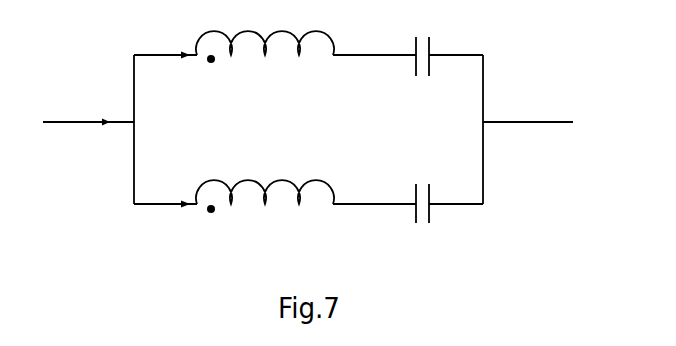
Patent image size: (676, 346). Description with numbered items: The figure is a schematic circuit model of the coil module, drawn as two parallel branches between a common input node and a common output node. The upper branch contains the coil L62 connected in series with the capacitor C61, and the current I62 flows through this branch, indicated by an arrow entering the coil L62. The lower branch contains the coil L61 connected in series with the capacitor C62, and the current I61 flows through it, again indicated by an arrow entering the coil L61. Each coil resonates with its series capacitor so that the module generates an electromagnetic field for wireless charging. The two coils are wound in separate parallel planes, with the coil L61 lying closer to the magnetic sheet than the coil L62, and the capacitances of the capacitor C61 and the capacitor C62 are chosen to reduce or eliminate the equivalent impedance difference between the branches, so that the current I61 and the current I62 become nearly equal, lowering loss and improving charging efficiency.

The current passing through the branch 62 I62 is at (165, 42).
The coil L62 is at (265, 32).
The capacitor C61 is at (427, 43).
The current passing through the branch 61 I61 is at (165, 220).
The coil L61 is at (265, 211).
The capacitor C62 is at (425, 219).